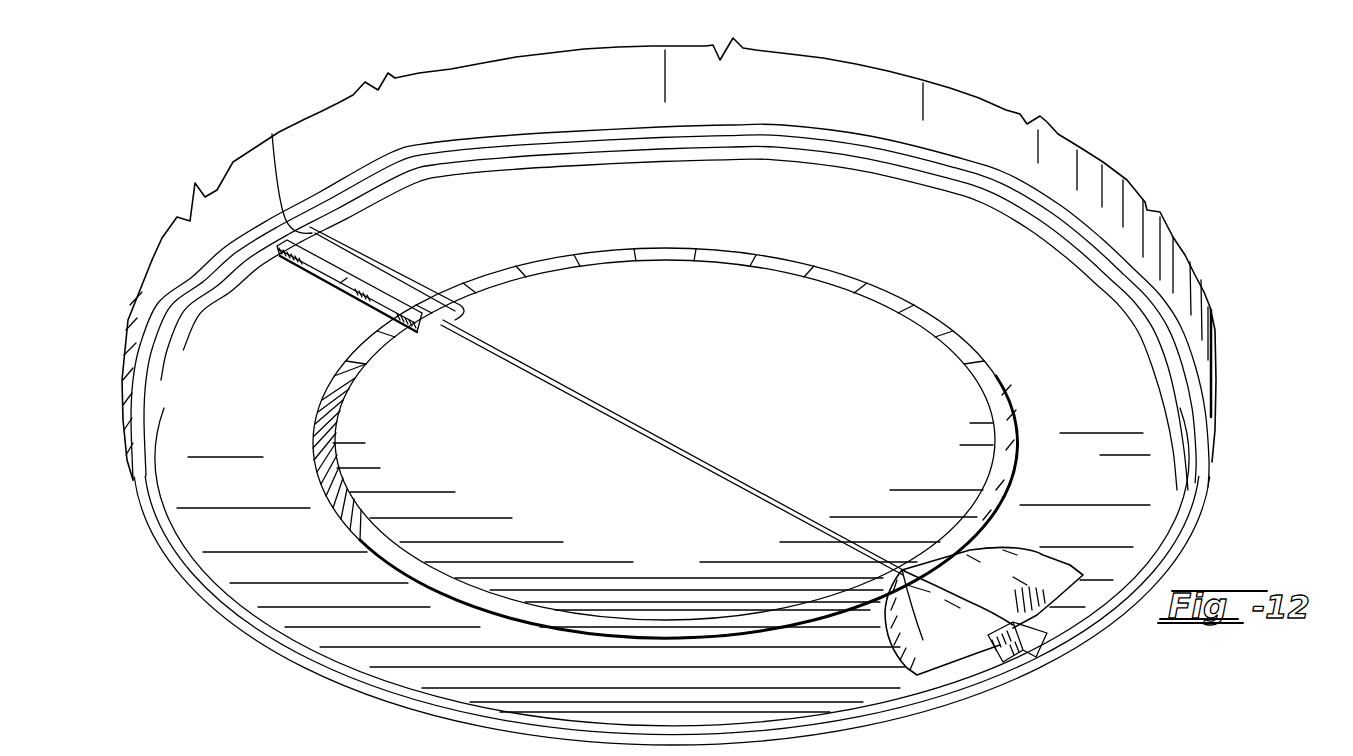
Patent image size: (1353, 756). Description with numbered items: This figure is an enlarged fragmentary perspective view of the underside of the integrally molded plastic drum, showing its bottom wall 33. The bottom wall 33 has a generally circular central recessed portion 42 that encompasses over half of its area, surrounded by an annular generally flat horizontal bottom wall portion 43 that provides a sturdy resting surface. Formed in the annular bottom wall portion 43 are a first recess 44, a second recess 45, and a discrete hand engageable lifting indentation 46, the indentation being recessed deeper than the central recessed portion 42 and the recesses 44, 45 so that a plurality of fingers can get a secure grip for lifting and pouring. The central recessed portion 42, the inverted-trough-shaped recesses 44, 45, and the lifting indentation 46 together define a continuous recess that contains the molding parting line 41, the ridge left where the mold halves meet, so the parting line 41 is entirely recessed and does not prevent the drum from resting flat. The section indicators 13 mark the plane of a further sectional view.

The section line for FIG. 13 is at (450, 268).
The bottom wall 33 is at (1155, 437).
The molding parting line 41 is at (680, 448).
The central recessed portion 42 is at (792, 366).
The annular generally flat horizontal bottom wall portion 43 is at (992, 284).
The first recess 44 is at (422, 302).
The second recess 45 is at (1040, 655).
The discrete hand engageable lifting indentation 46 is at (957, 612).